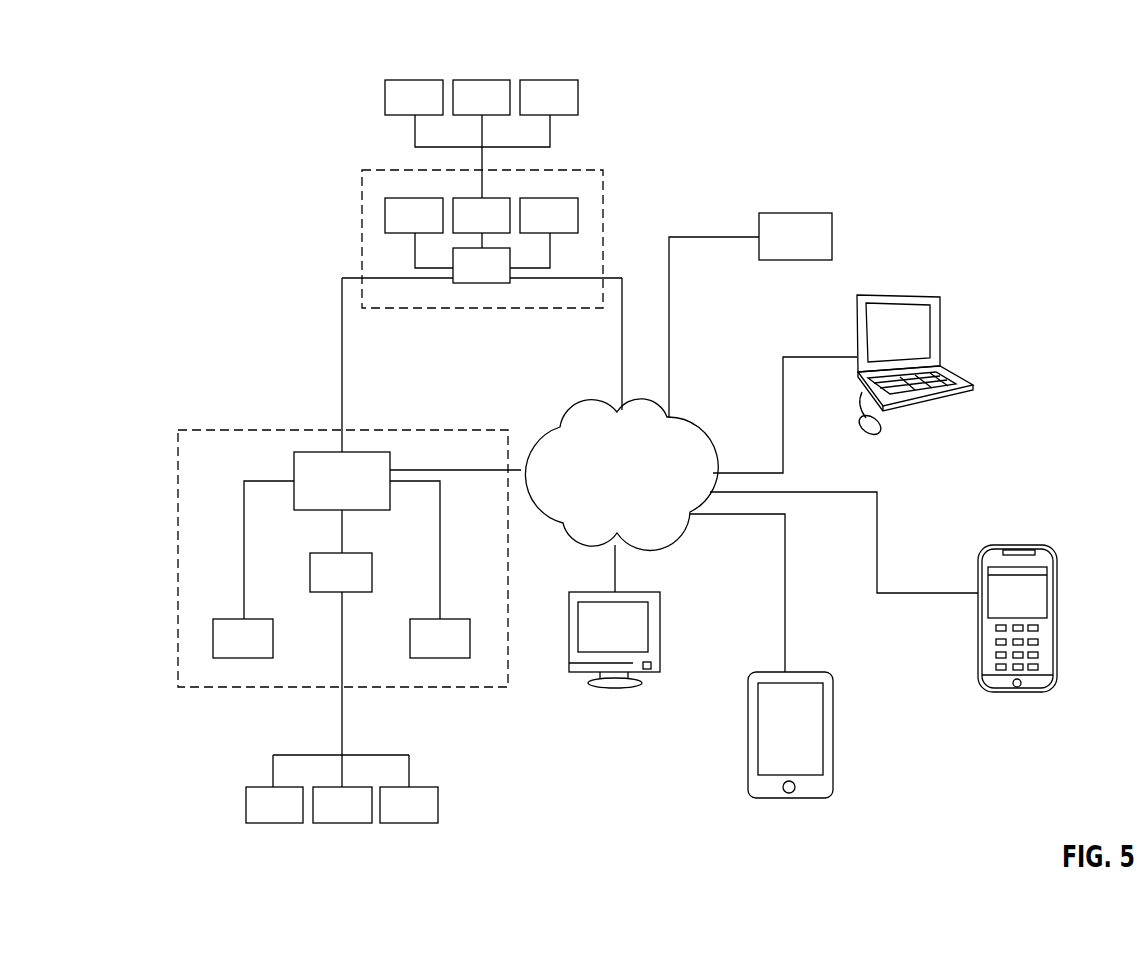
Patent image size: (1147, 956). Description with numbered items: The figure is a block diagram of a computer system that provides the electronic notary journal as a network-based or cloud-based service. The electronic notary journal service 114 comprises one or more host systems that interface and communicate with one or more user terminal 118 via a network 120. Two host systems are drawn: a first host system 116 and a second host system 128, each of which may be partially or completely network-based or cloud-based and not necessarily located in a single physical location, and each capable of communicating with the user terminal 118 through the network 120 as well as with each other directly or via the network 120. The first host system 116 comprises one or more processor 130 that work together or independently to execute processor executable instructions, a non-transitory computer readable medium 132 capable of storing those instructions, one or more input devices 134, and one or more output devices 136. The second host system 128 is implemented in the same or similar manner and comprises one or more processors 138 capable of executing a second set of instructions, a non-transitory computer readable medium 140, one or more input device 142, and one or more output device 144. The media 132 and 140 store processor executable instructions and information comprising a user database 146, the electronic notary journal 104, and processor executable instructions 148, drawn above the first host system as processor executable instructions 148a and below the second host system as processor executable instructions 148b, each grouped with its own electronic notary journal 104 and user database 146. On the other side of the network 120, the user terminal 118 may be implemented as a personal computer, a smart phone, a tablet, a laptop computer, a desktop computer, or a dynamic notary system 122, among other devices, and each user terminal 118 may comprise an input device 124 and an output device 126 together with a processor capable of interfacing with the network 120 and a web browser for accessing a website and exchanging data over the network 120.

The electronic notary journal service 114 is at (152, 78).
The processor executable instructions 148 is at (395, 80).
The processor executable instructions 148a is at (389, 112).
The processor executable instructions 148b is at (250, 820).
The electronic notary journal 104 is at (463, 112).
The user database 146 is at (530, 112).
The first host system 116 is at (385, 170).
The input device 134 is at (395, 230).
The non-transitory computer readable medium 132 is at (463, 230).
The output device 136 is at (530, 230).
The processor 130 is at (463, 280).
The second host system 128 is at (210, 430).
The processor 138 is at (323, 495).
The non-transitory computer readable medium 140 is at (322, 586).
The input device 142 is at (224, 653).
The output device 144 is at (421, 653).
The network 120 is at (597, 488).
The dynamic notary system 122 is at (765, 213).
The user terminal 118 is at (832, 237).
The output device 126 is at (920, 325).
The input device 124 is at (945, 366).